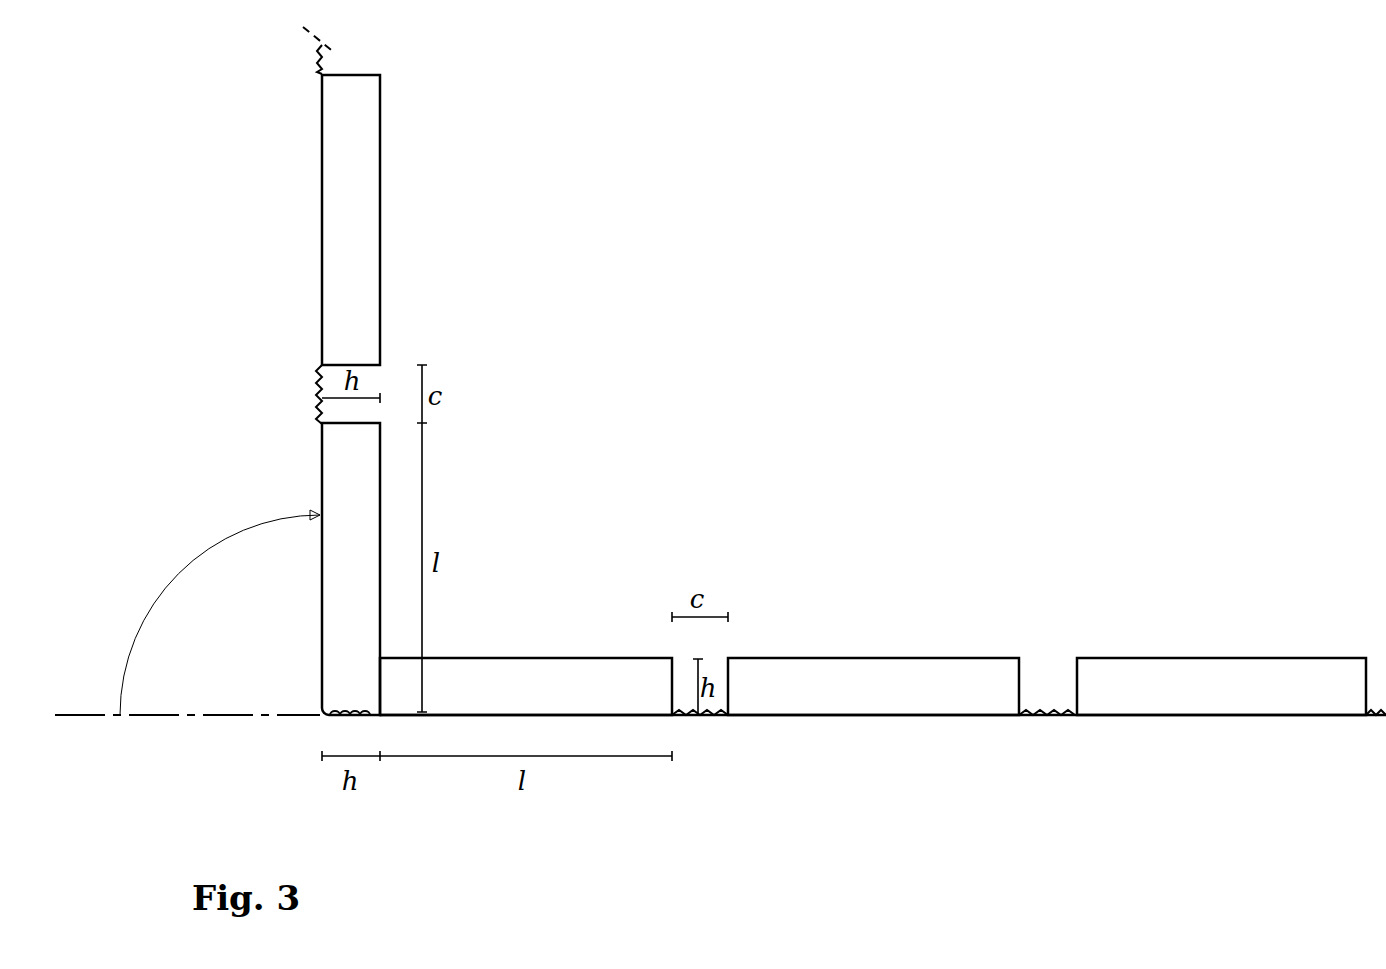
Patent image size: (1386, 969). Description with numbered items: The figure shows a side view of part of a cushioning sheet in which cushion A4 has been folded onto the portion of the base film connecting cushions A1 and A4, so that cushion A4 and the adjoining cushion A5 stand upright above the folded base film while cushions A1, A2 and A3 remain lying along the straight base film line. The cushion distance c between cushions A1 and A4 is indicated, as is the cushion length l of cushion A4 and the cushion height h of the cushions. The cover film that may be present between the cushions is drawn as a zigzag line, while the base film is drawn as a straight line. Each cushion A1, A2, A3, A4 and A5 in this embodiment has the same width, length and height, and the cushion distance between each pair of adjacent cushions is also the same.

The cushion A1 is at (526, 686).
The cushion A2 is at (873, 686).
The cushion A3 is at (1221, 686).
The cushion A4 is at (351, 569).
The cushion A5 is at (351, 220).